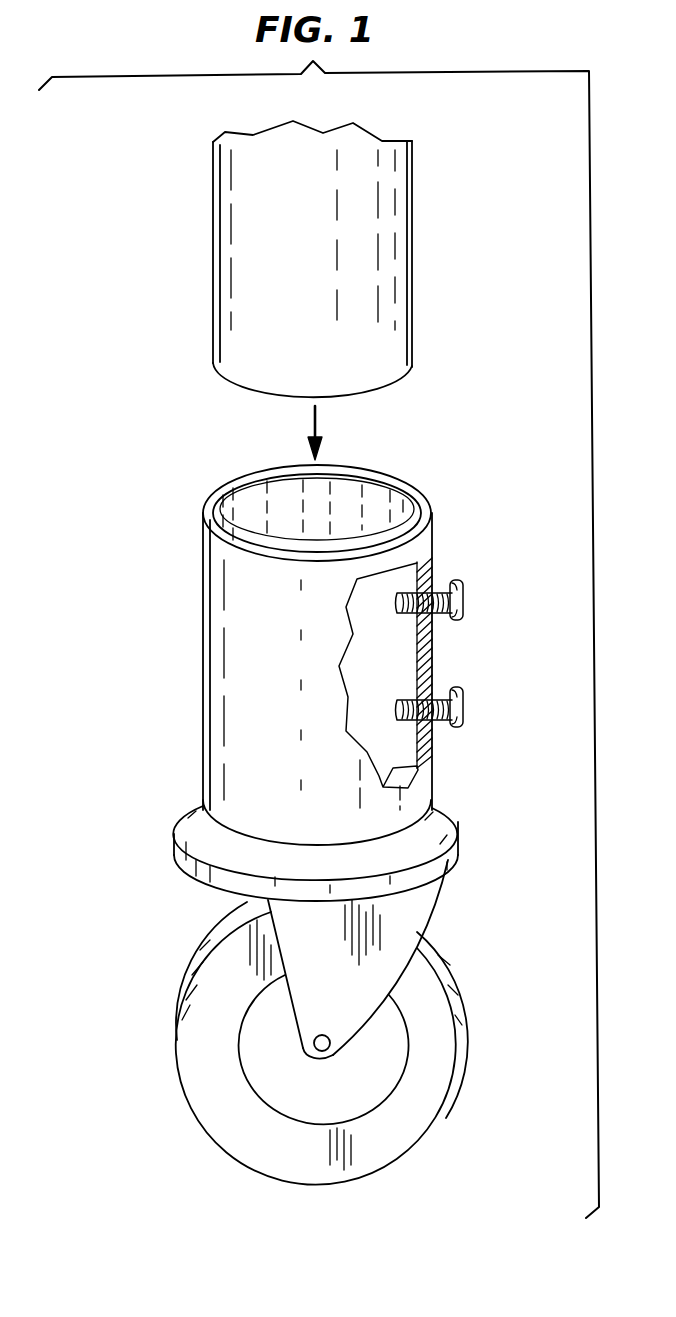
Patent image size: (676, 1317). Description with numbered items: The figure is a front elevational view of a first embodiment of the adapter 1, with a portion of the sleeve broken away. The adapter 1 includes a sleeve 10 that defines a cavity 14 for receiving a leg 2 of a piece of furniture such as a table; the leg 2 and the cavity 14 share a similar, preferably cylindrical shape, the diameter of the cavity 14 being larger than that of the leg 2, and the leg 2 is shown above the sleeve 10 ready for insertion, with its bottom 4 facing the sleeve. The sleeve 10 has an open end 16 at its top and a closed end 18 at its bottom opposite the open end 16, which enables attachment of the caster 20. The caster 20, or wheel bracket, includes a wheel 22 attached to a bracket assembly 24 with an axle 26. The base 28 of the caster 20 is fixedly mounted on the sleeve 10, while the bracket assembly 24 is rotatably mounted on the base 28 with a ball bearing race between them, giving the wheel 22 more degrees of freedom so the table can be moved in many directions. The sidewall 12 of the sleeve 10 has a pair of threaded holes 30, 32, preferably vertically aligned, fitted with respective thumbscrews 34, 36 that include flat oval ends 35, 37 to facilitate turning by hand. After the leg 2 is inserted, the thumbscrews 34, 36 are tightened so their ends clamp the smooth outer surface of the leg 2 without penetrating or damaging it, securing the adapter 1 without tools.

The adapter 1 is at (150, 604).
The leg 2 is at (413, 262).
The bottom of the leg 4 is at (213, 363).
The sleeve 10 is at (434, 524).
The sidewall 12 is at (203, 705).
The cavity 14 is at (372, 508).
The open end 16 is at (203, 517).
The closed end 18 is at (203, 800).
The caster 20 is at (470, 878).
The wheel 22 is at (185, 1088).
The bracket assembly 24 is at (405, 925).
The axle 26 is at (317, 1053).
The base 28 is at (447, 822).
The threaded hole 30 is at (463, 613).
The threaded hole 32 is at (463, 718).
The thumbscrew 34 is at (463, 593).
The flat oval end 35 is at (458, 605).
The thumbscrew 36 is at (458, 711).
The flat oval end 37 is at (463, 695).